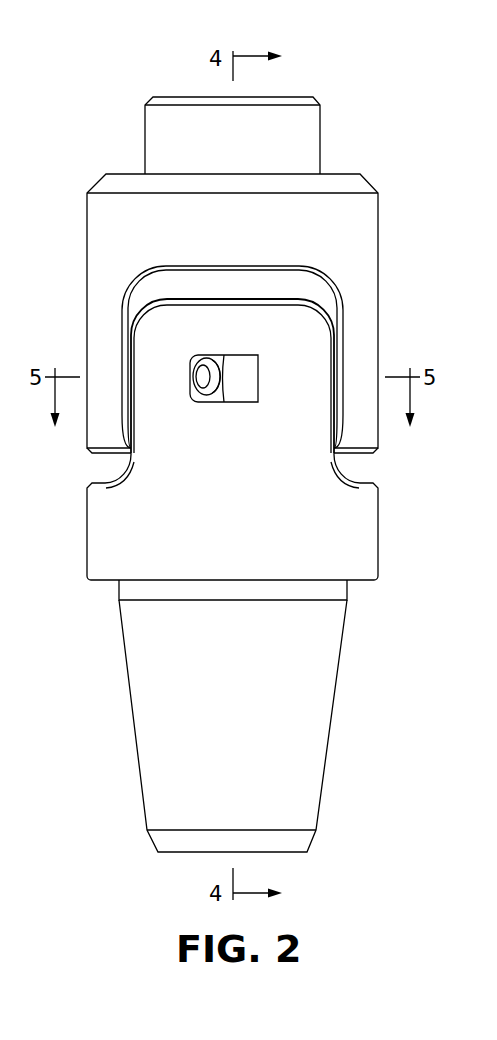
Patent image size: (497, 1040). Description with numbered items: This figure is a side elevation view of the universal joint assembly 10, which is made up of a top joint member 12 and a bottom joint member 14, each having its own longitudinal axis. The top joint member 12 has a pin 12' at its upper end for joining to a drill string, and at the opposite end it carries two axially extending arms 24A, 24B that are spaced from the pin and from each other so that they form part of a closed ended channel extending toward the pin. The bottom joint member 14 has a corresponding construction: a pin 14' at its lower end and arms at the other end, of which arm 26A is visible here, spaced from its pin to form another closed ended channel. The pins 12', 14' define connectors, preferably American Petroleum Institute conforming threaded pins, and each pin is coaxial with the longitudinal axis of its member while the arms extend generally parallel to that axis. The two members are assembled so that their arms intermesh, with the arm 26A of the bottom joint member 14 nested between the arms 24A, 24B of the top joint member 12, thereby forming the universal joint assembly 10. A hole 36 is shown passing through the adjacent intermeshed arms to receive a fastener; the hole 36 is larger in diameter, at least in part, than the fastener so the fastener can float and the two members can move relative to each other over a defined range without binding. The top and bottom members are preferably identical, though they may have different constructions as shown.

The universal joint assembly 10 is at (112, 110).
The top joint member 12 is at (204, 237).
The pin 12' is at (267, 135).
The bottom joint member 14 is at (203, 526).
The pin 14' is at (260, 726).
The arm 24A is at (87, 432).
The arm 24B is at (378, 432).
The arm 26A is at (233, 300).
The hole 36 is at (215, 395).